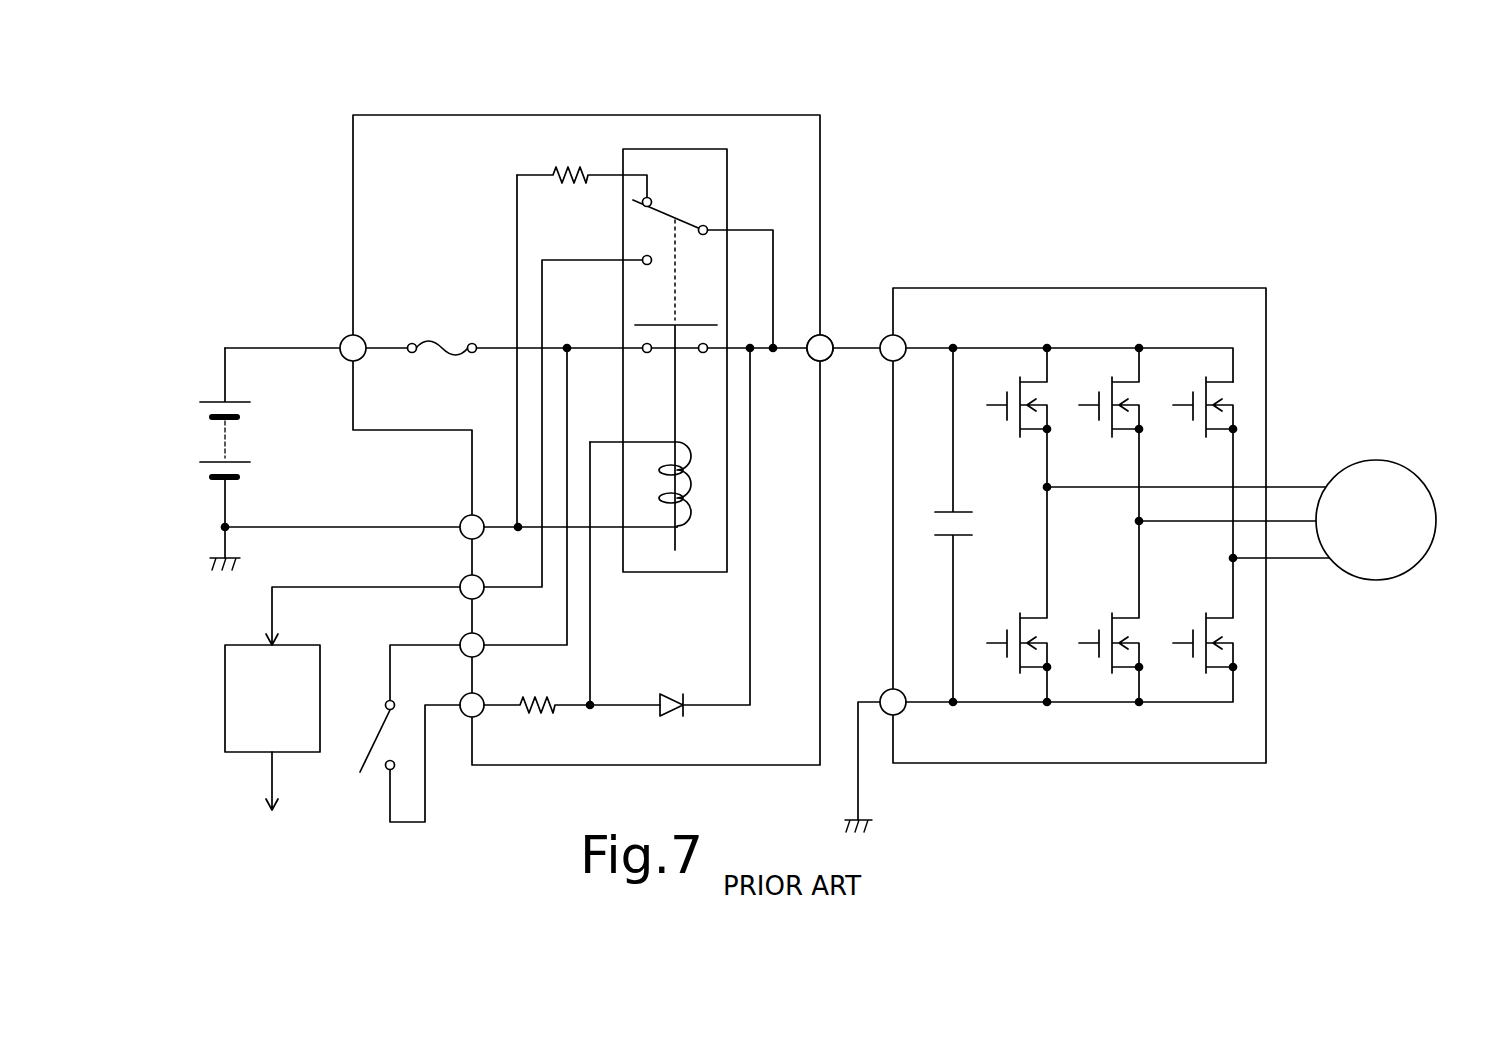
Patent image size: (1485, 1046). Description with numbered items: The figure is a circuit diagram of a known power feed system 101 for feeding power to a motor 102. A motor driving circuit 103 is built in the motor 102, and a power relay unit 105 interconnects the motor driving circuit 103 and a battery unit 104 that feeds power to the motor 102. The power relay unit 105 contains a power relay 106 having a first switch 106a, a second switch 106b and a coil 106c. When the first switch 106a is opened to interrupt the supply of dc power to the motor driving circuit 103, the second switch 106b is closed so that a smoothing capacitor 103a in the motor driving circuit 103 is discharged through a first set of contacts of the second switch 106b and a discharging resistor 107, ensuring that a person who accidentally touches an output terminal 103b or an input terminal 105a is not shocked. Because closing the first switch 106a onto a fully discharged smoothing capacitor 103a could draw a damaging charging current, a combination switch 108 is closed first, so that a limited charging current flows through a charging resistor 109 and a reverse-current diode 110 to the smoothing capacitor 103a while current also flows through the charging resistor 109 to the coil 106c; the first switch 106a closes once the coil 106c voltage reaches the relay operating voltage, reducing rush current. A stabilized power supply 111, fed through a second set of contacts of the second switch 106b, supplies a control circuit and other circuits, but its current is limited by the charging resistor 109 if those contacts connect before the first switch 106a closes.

The power feed system 101 is at (1176, 163).
The motor 102 is at (1376, 459).
The motor driving circuit 103 is at (1126, 250).
The smoothing capacitor 103a is at (980, 527).
The output terminal 103b is at (885, 360).
The battery unit 104 is at (240, 446).
The power relay unit 105 is at (488, 93).
The input terminal 105a is at (830, 339).
The power relay 106 is at (674, 414).
The first switch 106a is at (657, 323).
The second switch 106b is at (673, 207).
The coil 106c is at (700, 513).
The discharging resistor 107 is at (571, 186).
The combination switch 108 is at (373, 767).
The charging resistor 109 is at (538, 717).
The reverse-current diode 110 is at (662, 717).
The stabilized power supply 111 is at (225, 730).